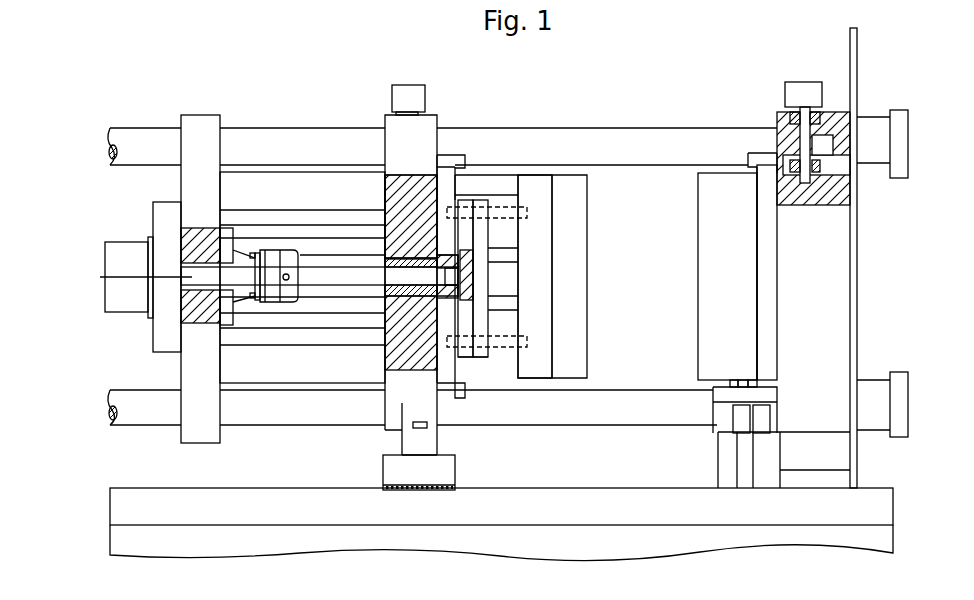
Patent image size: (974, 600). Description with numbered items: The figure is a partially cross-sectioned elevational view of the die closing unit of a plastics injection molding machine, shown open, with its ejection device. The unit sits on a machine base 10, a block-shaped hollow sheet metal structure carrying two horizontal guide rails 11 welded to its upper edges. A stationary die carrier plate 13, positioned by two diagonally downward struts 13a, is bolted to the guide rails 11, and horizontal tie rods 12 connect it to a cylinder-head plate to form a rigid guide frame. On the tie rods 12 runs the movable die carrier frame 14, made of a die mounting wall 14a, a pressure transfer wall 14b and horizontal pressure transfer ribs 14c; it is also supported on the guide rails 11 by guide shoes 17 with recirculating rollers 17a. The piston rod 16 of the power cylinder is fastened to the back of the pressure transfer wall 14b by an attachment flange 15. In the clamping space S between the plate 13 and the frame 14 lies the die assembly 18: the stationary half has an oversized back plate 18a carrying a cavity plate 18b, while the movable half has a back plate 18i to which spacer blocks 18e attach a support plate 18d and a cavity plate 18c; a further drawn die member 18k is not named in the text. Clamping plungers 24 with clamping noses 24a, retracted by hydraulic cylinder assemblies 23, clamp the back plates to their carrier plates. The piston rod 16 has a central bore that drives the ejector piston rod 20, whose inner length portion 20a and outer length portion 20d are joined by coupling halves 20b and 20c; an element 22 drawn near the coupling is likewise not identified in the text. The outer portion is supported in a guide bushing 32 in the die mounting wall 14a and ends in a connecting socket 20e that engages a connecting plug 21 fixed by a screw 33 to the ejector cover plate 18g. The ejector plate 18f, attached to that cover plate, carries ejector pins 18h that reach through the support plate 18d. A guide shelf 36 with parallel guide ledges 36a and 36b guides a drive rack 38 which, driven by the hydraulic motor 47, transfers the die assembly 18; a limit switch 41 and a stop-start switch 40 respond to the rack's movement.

The machine base 10 is at (865, 542).
The guide rails 11 is at (870, 505).
The tie rods 12 is at (663, 140).
The stationary die carrier plate 13 is at (853, 278).
The struts 13a is at (830, 480).
The movable die carrier frame 14 is at (313, 166).
The die mounting wall 14a is at (417, 132).
The pressure transfer wall 14b is at (200, 145).
The pressure transfer ribs 14c is at (358, 337).
The attachment flange 15 is at (168, 331).
The piston rod 16 is at (124, 255).
The guide shoes 17 is at (430, 472).
The recirculating rollers 17a is at (428, 492).
The die assembly 18 is at (690, 312).
The back plate 18a is at (768, 327).
The cavity plate 18b is at (735, 230).
The cavity plate 18c is at (570, 195).
The support plate 18d is at (540, 225).
The spacer blocks 18e is at (498, 183).
The ejector plate 18f is at (480, 333).
The ejector cover plate 18g is at (482, 245).
The ejector pins 18h is at (507, 302).
The back plate 18i is at (467, 230).
The guide bolt 18k is at (508, 342).
The ejector piston rod 20 is at (345, 260).
The inner length portion 20a is at (100, 277).
The coupling half 20b is at (254, 300).
The coupling half 20c is at (272, 290).
The outer length portion 20d is at (313, 277).
The connecting socket 20e is at (400, 295).
The connecting plug 21 is at (470, 262).
The piston 22 is at (287, 274).
The hydraulic cylinder assembly 23 is at (408, 98).
The clamping plunger 24 is at (443, 160).
The clamping nose 24a is at (448, 188).
The guide bushing 32 is at (420, 250).
The screw 33 is at (480, 292).
The guide shelf 36 is at (723, 411).
The guide ledge 36a is at (730, 382).
The guide ledge 36b is at (757, 383).
The drive rack 38 is at (745, 380).
The stop-start switch 40 is at (763, 417).
The limit switch 41 is at (718, 433).
The hydraulic motor 47 is at (747, 472).
The clamping space S is at (688, 282).